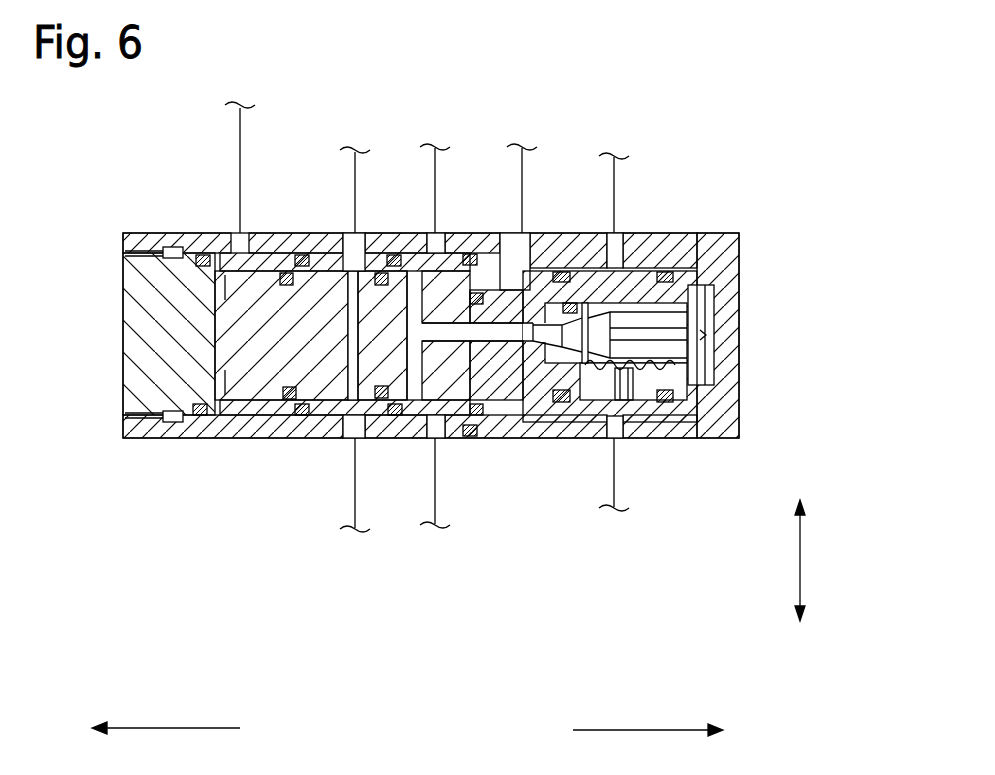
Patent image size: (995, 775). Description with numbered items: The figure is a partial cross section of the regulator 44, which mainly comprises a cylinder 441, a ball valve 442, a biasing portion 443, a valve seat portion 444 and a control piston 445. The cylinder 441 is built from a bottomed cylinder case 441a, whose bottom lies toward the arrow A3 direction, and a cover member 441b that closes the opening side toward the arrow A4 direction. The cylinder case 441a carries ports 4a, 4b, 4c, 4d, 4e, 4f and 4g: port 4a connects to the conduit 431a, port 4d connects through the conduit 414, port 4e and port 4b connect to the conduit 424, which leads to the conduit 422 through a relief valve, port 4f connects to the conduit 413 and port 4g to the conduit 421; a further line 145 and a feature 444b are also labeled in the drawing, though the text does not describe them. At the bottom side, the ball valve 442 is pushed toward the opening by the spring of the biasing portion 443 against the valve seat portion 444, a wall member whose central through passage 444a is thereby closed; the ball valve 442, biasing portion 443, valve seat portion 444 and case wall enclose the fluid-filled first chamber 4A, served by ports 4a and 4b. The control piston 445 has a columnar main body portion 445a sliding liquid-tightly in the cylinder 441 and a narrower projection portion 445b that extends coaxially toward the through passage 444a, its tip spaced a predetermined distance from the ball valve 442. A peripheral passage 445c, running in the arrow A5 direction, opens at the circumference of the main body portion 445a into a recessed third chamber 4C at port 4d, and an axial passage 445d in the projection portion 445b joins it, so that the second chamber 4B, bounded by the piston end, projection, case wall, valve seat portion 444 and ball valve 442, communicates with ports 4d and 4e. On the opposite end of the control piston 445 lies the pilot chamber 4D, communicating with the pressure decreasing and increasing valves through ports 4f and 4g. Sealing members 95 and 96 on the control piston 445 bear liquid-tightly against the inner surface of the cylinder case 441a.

The regulator 44 is at (768, 377).
The cylinder 441 is at (750, 258).
The cylinder case 441a is at (710, 270).
The cover member 441b is at (135, 285).
The ball valve 442 is at (625, 430).
The biasing portion 443 is at (705, 425).
The valve seat portion 444 is at (563, 325).
The through passage 444a is at (590, 400).
The spring 444b is at (690, 415).
The control piston 445 is at (340, 400).
The main body portion 445a is at (350, 432).
The projection portion 445b is at (530, 400).
The passage 445c is at (405, 405).
The passage 445d is at (452, 345).
The first chamber 4A is at (715, 316).
The second chamber 4B is at (536, 300).
The third chamber 4C is at (453, 233).
The pilot chamber 4D is at (306, 256).
The port 4a is at (619, 248).
The port 4b is at (616, 440).
The port 4c is at (506, 233).
The port 4d is at (411, 233).
The port 4e is at (440, 432).
The port 4f is at (346, 252).
The port 4g is at (333, 432).
The conduit 413 is at (357, 176).
The conduit 414 is at (437, 168).
The pipe 145 is at (524, 170).
The conduit 431a is at (616, 185).
The conduit 421 is at (350, 510).
The conduit 422 is at (612, 483).
The conduit 424 is at (432, 508).
The sealing member 95 is at (583, 262).
The sealing member 96 is at (689, 270).
The arrow A3 direction A3 is at (650, 730).
The arrow A4 direction A4 is at (177, 728).
The arrow A5 direction A5 is at (802, 568).